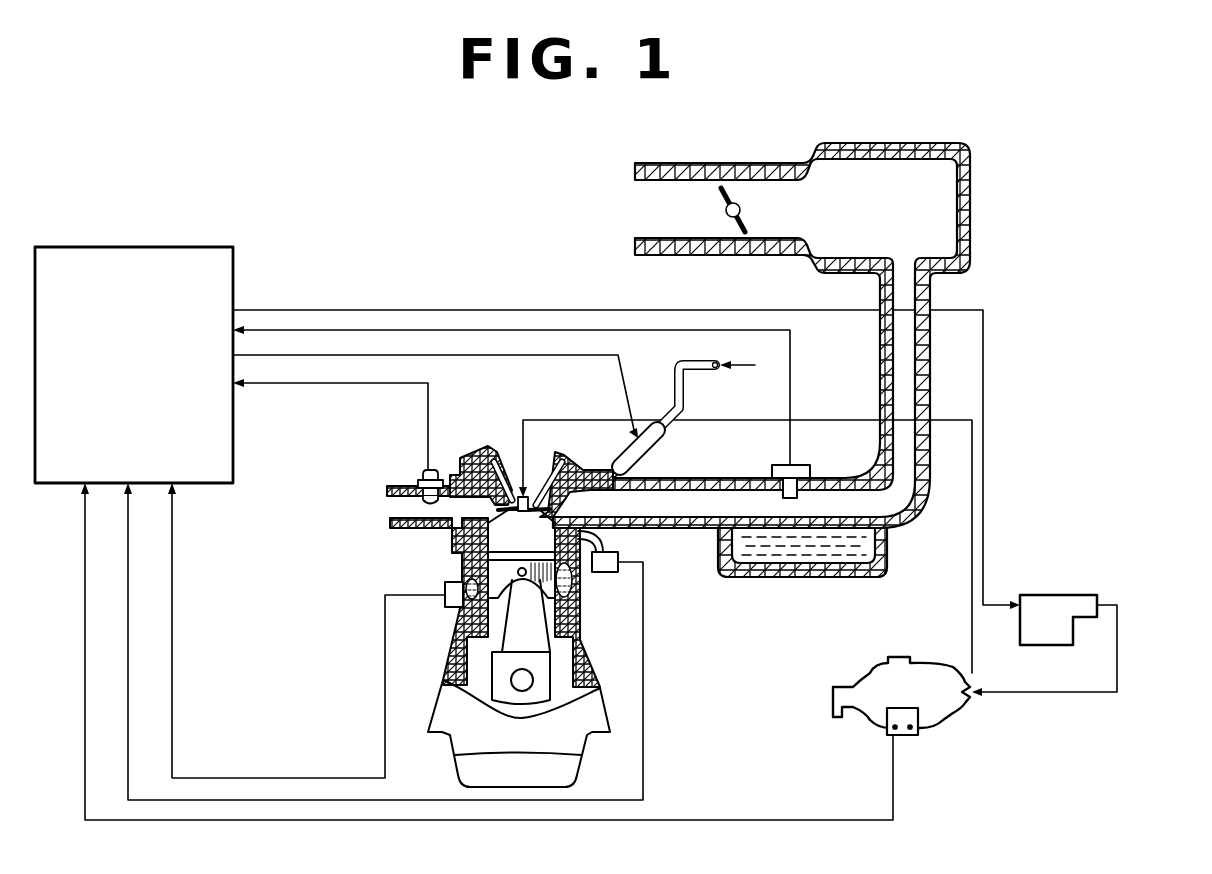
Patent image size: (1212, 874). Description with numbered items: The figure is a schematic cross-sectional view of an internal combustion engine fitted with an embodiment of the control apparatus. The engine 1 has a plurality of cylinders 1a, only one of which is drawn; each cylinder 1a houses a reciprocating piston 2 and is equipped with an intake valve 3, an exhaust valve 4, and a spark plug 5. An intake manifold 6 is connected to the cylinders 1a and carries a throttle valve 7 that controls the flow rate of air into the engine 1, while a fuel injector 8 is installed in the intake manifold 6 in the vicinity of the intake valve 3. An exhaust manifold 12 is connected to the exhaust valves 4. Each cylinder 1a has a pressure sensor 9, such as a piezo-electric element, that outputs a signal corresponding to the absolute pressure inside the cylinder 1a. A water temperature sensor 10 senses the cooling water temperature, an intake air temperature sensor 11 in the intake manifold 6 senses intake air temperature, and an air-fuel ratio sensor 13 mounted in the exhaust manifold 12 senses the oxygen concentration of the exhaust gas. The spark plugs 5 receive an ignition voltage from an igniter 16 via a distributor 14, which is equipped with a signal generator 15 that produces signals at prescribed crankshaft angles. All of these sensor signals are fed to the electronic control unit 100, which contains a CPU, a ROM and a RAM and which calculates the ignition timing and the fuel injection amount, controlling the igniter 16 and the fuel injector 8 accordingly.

The engine 1 is at (422, 698).
The cylinder 1a is at (466, 568).
The piston 2 is at (470, 548).
The intake valve 3 is at (553, 505).
The exhaust valve 4 is at (490, 502).
The spark plug 5 is at (516, 490).
The intake manifold 6 is at (667, 529).
The throttle valve 7 is at (743, 183).
The fuel injector 8 is at (664, 452).
The pressure sensor 9 is at (603, 573).
The water temperature sensor 10 is at (448, 612).
The intake air temperature sensor 11 is at (812, 465).
The exhaust manifold 12 is at (392, 527).
The air-fuel ratio sensor 13 is at (422, 470).
The distributor 14 is at (866, 730).
The signal generator 15 is at (912, 737).
The igniter 16 is at (1060, 596).
The electronic control unit 100 is at (233, 412).